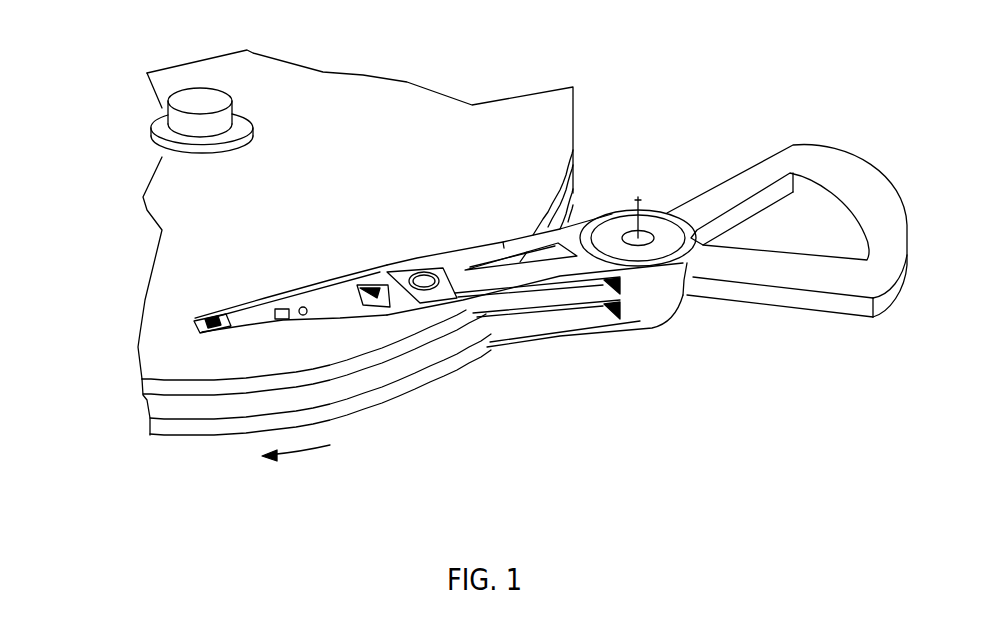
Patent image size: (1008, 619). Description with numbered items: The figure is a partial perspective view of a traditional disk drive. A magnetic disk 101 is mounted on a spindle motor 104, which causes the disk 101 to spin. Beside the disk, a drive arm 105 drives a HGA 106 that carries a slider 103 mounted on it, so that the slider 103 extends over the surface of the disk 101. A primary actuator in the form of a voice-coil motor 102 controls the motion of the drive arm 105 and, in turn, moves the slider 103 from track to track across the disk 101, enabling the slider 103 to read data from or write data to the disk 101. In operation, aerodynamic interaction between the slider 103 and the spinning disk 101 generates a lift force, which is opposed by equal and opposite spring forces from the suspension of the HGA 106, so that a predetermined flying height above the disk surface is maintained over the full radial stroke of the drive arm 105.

The magnetic disk 101 is at (388, 130).
The voice-coil motor 102 is at (852, 283).
The slider 103 is at (198, 328).
The spindle motor 104 is at (202, 101).
The drive arm 105 is at (557, 265).
The HGA 106 is at (342, 317).